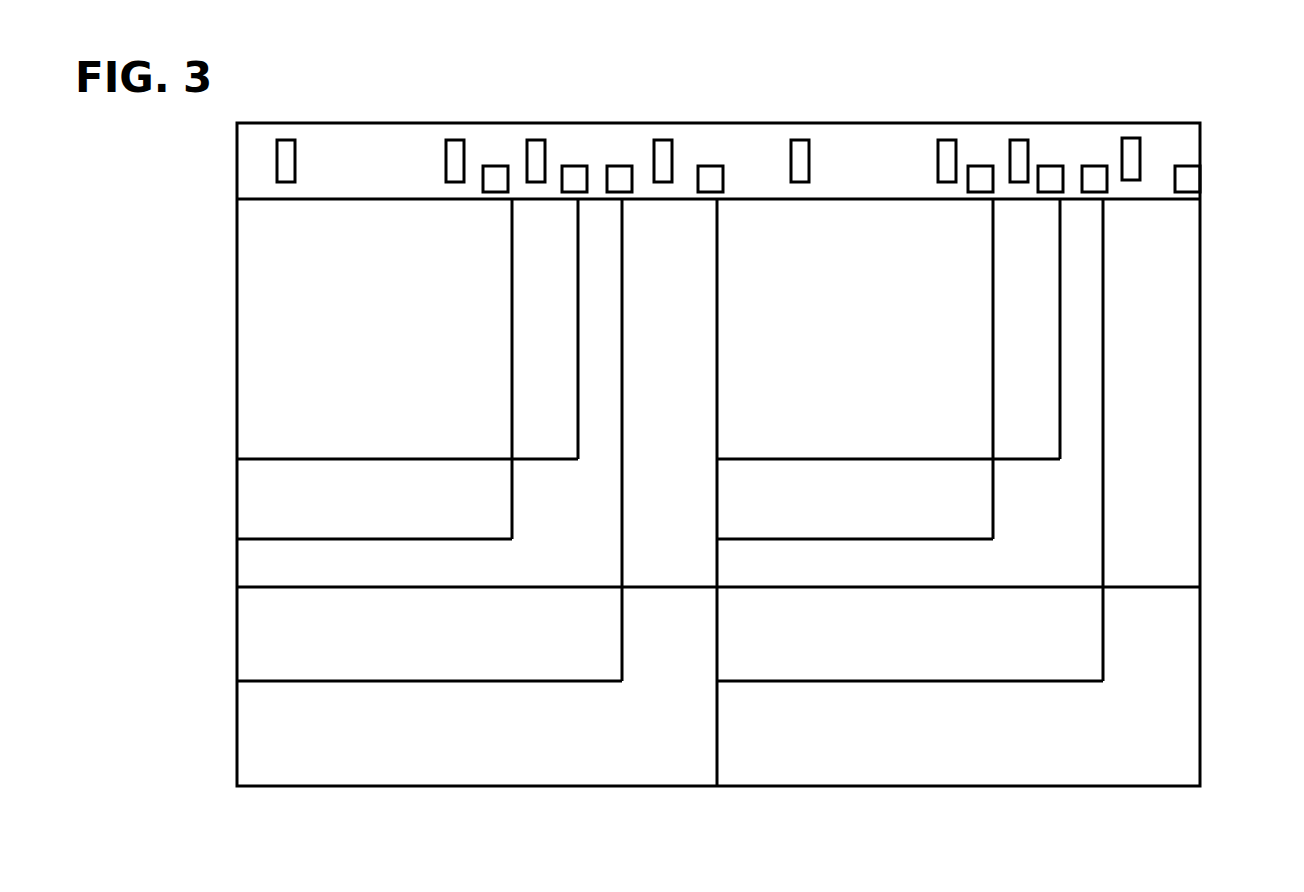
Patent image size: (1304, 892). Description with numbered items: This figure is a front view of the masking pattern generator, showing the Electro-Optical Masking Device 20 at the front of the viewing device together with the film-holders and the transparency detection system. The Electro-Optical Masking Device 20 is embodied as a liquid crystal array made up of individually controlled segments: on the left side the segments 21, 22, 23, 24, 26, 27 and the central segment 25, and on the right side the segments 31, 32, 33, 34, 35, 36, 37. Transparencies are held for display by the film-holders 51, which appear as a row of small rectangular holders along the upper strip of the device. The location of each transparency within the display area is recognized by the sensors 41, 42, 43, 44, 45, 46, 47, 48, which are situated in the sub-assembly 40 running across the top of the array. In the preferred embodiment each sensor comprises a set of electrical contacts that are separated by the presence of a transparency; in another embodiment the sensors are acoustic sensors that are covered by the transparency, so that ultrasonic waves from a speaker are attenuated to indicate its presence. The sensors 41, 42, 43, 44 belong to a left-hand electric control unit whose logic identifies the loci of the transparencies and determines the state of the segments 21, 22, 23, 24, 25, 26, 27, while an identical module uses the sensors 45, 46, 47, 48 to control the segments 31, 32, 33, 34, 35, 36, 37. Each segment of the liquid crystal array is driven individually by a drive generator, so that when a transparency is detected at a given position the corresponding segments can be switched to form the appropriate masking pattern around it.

The Electro-Optical Masking Device 20 is at (237, 262).
The LCA segment 21 is at (258, 313).
The LCA segment 22 is at (512, 387).
The LCA segment 23 is at (240, 503).
The LCA segment 24 is at (240, 578).
The LCA segment 25 is at (650, 582).
The LCA segment 26 is at (242, 640).
The LCA segment 27 is at (242, 740).
The LCA segment 31 is at (977, 272).
The LCA segment 32 is at (1040, 320).
The LCA segment 33 is at (981, 505).
The LCA segment 34 is at (1088, 375).
The LCA segment 35 is at (1189, 464).
The LCA segment 36 is at (1086, 641).
The LCA segment 37 is at (1197, 772).
The sub-assembly 40 is at (237, 183).
The sensor 41 is at (495, 168).
The sensor 42 is at (578, 168).
The sensor 43 is at (620, 168).
The sensor 44 is at (730, 152).
The sensor 45 is at (980, 168).
The sensor 46 is at (1052, 168).
The sensor 47 is at (1090, 168).
The sensor 48 is at (1185, 168).
The film-holder 51 is at (290, 152).